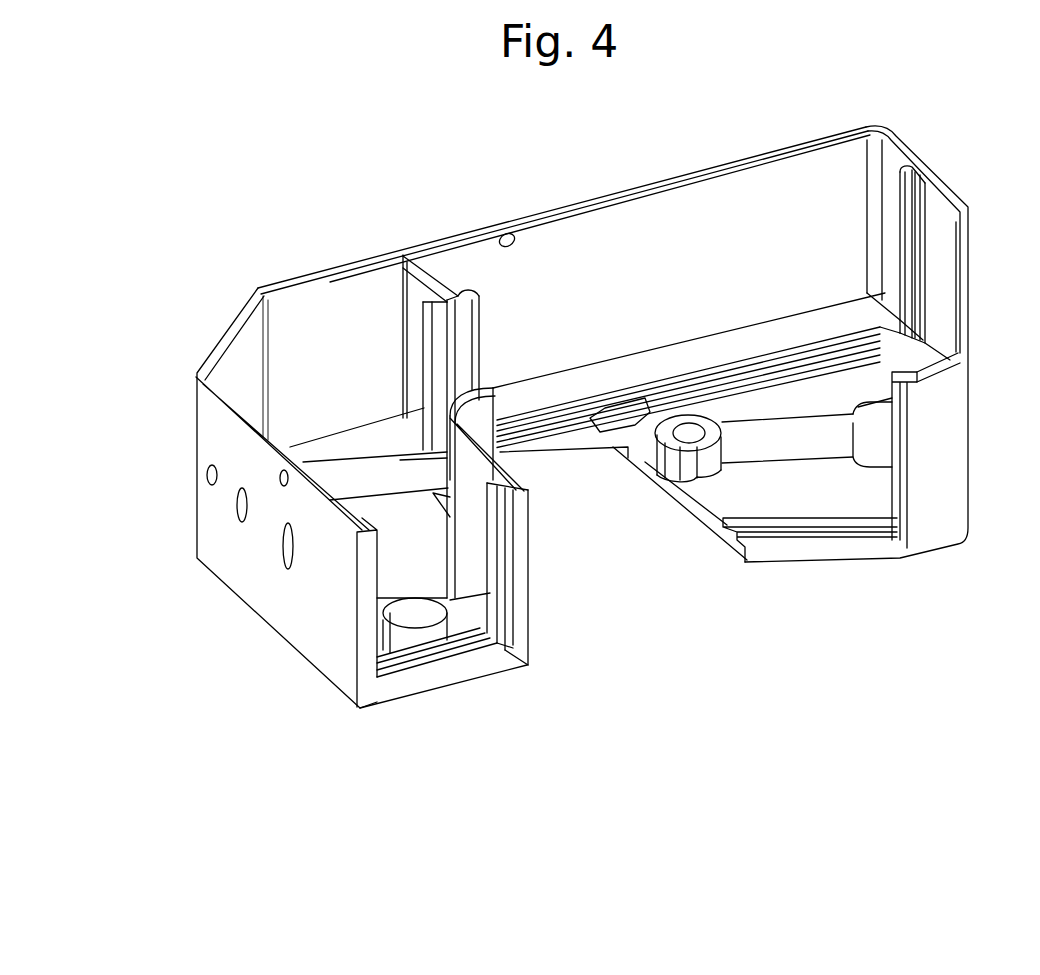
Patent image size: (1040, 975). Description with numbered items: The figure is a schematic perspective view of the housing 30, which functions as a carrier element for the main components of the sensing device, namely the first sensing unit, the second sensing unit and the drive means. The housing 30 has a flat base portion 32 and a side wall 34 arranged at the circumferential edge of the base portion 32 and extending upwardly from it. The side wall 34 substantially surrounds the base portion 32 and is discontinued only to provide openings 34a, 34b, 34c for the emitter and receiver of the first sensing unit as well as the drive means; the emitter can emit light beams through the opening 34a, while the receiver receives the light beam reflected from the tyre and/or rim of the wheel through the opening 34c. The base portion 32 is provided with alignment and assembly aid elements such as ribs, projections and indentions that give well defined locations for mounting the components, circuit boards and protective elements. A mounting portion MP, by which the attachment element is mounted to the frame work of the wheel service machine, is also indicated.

The housing 30 is at (185, 134).
The base portion 32 is at (524, 390).
The side wall 34 is at (473, 495).
The opening 34a is at (377, 580).
The opening 34b is at (540, 476).
The opening 34c is at (897, 440).
The mounting portion MP is at (667, 474).